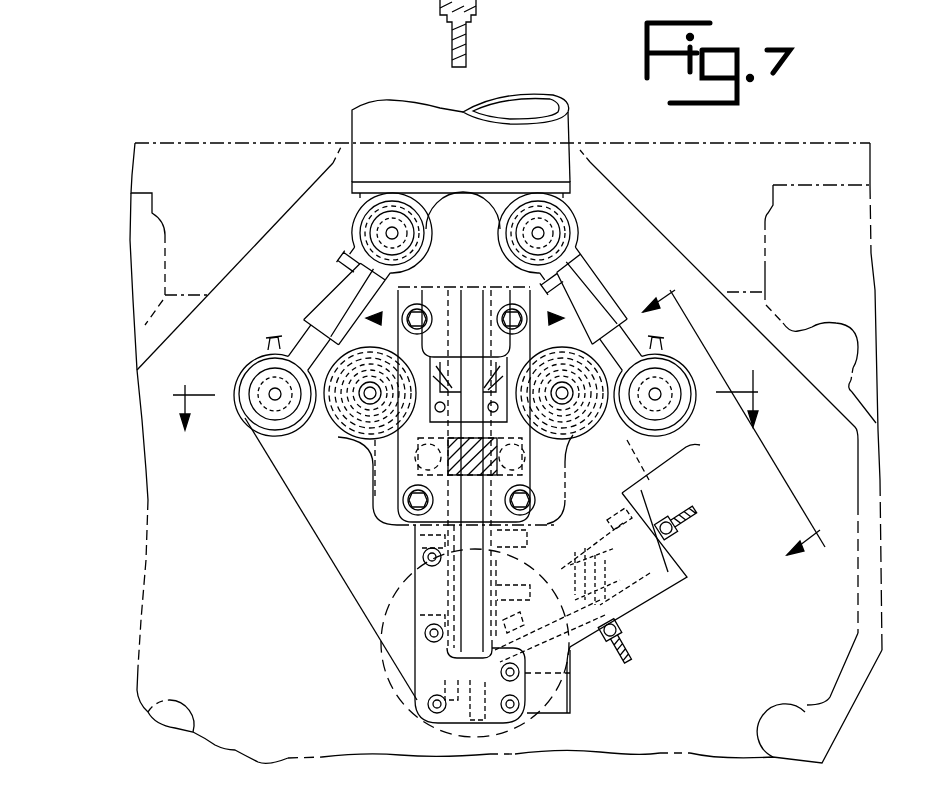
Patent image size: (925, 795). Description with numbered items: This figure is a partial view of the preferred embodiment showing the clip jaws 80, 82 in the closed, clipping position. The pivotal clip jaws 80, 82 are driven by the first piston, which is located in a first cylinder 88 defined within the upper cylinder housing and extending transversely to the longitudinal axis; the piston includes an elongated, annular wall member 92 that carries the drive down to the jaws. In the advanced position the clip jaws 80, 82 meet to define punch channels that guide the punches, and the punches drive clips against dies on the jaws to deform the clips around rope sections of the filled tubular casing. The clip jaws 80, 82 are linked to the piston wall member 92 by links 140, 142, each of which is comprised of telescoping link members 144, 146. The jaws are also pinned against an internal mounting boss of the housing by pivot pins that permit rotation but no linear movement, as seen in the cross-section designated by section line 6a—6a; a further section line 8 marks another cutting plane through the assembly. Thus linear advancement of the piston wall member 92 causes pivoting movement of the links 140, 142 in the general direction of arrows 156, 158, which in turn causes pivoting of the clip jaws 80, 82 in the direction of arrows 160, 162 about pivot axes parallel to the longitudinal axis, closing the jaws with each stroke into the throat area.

The first cylinder 88 is at (468, 42).
The elongated annular wall member 92 is at (513, 137).
The arrow 156 is at (345, 260).
The arrow 158 is at (587, 276).
The link 140 is at (335, 270).
The link 142 is at (610, 282).
The telescoping link member 144 is at (322, 300).
The telescoping link member 146 is at (256, 366).
The clip jaw 80 is at (360, 608).
The clip jaw 82 is at (700, 445).
The arrow 160 is at (328, 560).
The arrow 162 is at (700, 506).
The section line 8- 8 is at (744, 416).
The section line 6a- 6a is at (474, 400).